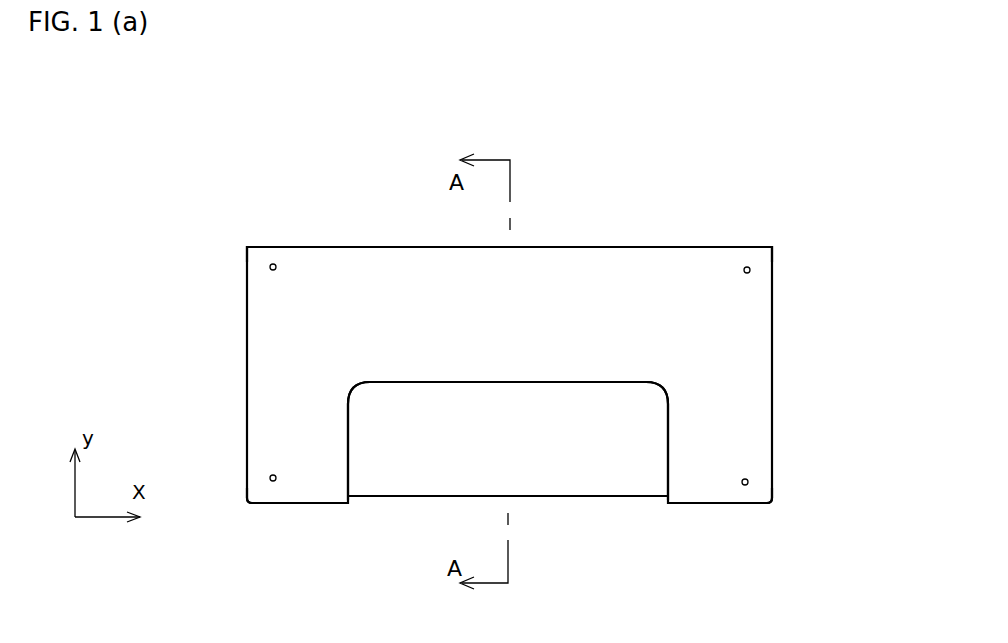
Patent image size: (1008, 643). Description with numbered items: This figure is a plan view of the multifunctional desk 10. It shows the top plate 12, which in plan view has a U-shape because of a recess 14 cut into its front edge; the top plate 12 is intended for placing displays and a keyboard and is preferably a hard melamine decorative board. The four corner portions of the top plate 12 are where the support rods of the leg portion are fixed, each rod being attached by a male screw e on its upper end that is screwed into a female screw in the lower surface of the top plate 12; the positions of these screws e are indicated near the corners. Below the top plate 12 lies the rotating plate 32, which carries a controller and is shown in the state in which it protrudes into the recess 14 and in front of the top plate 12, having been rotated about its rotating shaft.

The multifunctional desk 10 is at (247, 199).
The top plate 12 is at (648, 246).
The recess 14 is at (668, 455).
The rotating plate 32 is at (397, 498).
The male screw e is at (270, 269).